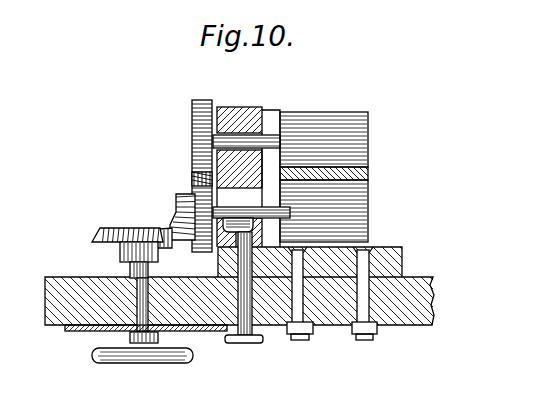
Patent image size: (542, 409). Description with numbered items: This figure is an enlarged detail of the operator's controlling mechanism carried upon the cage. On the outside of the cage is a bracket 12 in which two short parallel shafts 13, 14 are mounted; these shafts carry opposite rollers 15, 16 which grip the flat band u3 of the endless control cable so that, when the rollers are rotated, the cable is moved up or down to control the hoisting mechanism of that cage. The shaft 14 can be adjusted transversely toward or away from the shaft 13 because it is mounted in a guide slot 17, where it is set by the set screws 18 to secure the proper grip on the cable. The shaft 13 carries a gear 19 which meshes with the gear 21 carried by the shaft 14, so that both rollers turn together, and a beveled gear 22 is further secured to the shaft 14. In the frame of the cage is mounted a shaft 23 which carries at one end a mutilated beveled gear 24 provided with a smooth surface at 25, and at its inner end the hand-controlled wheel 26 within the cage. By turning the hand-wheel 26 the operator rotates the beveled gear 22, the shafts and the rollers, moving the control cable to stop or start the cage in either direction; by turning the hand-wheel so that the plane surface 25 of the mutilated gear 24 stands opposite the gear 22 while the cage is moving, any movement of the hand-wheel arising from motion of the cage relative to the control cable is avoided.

The bracket 12 is at (239, 110).
The shaft 13 is at (267, 133).
The shaft 14 is at (286, 209).
The roller 15 is at (370, 125).
The flat band u3 is at (368, 171).
The roller 16 is at (366, 207).
The guide slot 17 is at (194, 178).
The set screws 18 is at (267, 328).
The gear 19 is at (193, 118).
The gear 21 is at (233, 200).
The beveled gear 22 is at (176, 210).
The shaft 23 is at (93, 330).
The mutilated beveled gear 24 is at (92, 233).
The smooth surface 25 is at (135, 227).
The hand-wheel 26 is at (161, 365).